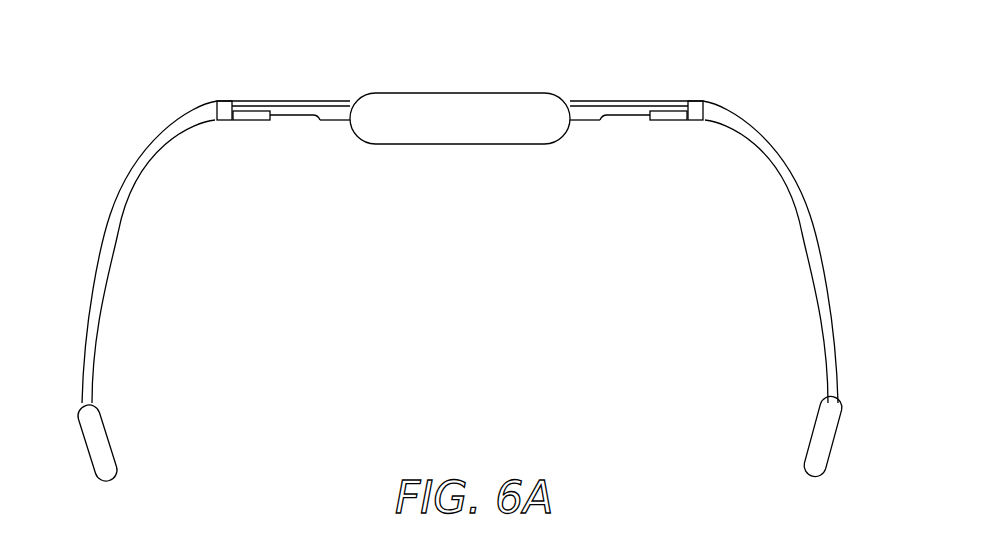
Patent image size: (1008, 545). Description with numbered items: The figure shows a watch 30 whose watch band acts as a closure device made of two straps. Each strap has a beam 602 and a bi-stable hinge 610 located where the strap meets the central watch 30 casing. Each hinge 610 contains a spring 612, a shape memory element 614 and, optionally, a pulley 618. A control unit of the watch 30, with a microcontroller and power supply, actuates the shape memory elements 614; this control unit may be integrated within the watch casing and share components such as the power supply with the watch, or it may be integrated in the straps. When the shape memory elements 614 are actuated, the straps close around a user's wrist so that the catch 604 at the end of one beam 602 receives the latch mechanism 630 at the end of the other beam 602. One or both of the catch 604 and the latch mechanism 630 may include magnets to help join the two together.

The watch 30 is at (480, 107).
The beam 602 is at (105, 238).
The catch 604 is at (818, 436).
The latch mechanism 630 is at (108, 447).
The bi-stable hinge 610 is at (305, 86).
The spring 612 is at (331, 101).
The shape memory element 614 is at (300, 119).
The pulley 618 is at (250, 121).